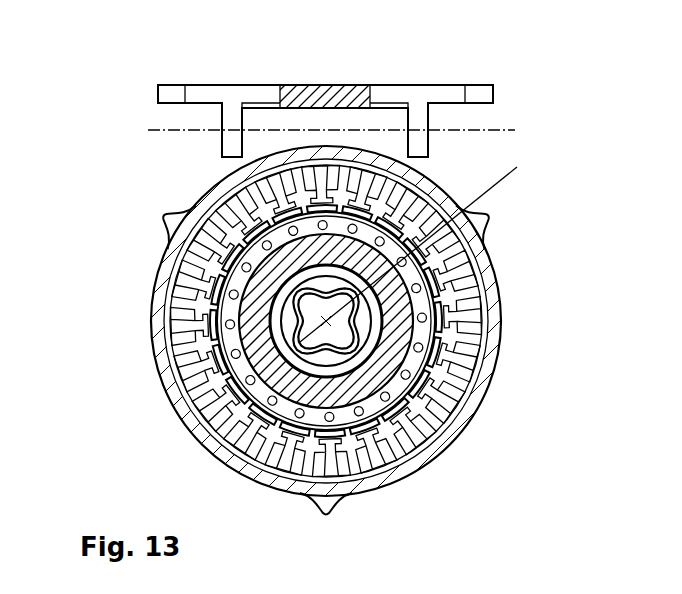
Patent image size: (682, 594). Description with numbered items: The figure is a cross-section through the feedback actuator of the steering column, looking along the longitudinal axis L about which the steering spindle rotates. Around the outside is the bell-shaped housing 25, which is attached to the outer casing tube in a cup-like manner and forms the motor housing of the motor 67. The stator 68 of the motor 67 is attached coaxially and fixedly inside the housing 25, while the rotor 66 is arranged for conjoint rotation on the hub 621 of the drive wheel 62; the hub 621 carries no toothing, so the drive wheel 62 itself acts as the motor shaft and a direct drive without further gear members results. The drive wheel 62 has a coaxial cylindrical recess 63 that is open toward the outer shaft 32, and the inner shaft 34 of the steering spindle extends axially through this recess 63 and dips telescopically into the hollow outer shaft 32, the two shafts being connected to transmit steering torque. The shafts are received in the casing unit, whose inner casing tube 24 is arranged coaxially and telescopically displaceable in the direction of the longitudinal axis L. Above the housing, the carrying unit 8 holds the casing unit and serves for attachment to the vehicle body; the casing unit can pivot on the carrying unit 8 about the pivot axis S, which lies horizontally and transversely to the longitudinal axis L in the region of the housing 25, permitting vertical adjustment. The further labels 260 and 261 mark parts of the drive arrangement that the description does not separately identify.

The carrying unit 8 is at (318, 98).
The pivot axis S is at (155, 130).
The longitudinal axis L is at (415, 248).
The rotor yoke 260 is at (420, 278).
The stator tooth 261 is at (460, 285).
The drive wheel 62 is at (432, 322).
The hub 621 is at (432, 337).
The bell-shaped housing 25 is at (473, 400).
The inner casing tube 24 is at (370, 388).
The recess 63 is at (275, 302).
The motor 67 is at (153, 310).
The outer shaft 32 is at (277, 337).
The inner shaft 34 is at (265, 345).
The rotor 66 is at (250, 382).
The stator 68 is at (222, 422).